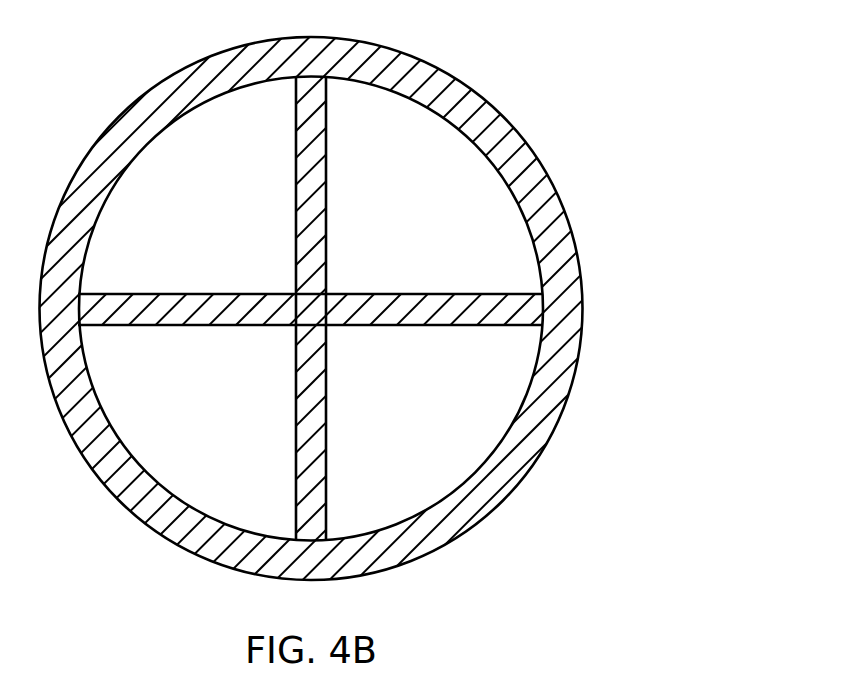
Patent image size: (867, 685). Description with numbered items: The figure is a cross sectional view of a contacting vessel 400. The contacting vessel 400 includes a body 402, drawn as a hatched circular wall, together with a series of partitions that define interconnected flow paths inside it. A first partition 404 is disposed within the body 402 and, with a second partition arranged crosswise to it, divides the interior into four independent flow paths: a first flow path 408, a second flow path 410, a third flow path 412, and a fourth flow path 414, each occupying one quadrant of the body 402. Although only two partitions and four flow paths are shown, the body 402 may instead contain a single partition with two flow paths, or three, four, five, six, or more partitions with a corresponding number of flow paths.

The contacting vessel 400 is at (433, 342).
The body 402 is at (547, 225).
The first partition 404 is at (325, 218).
The first flow path 408 is at (153, 208).
The second flow path 410 is at (153, 425).
The third flow path 412 is at (402, 425).
The fourth flow path 414 is at (418, 246).